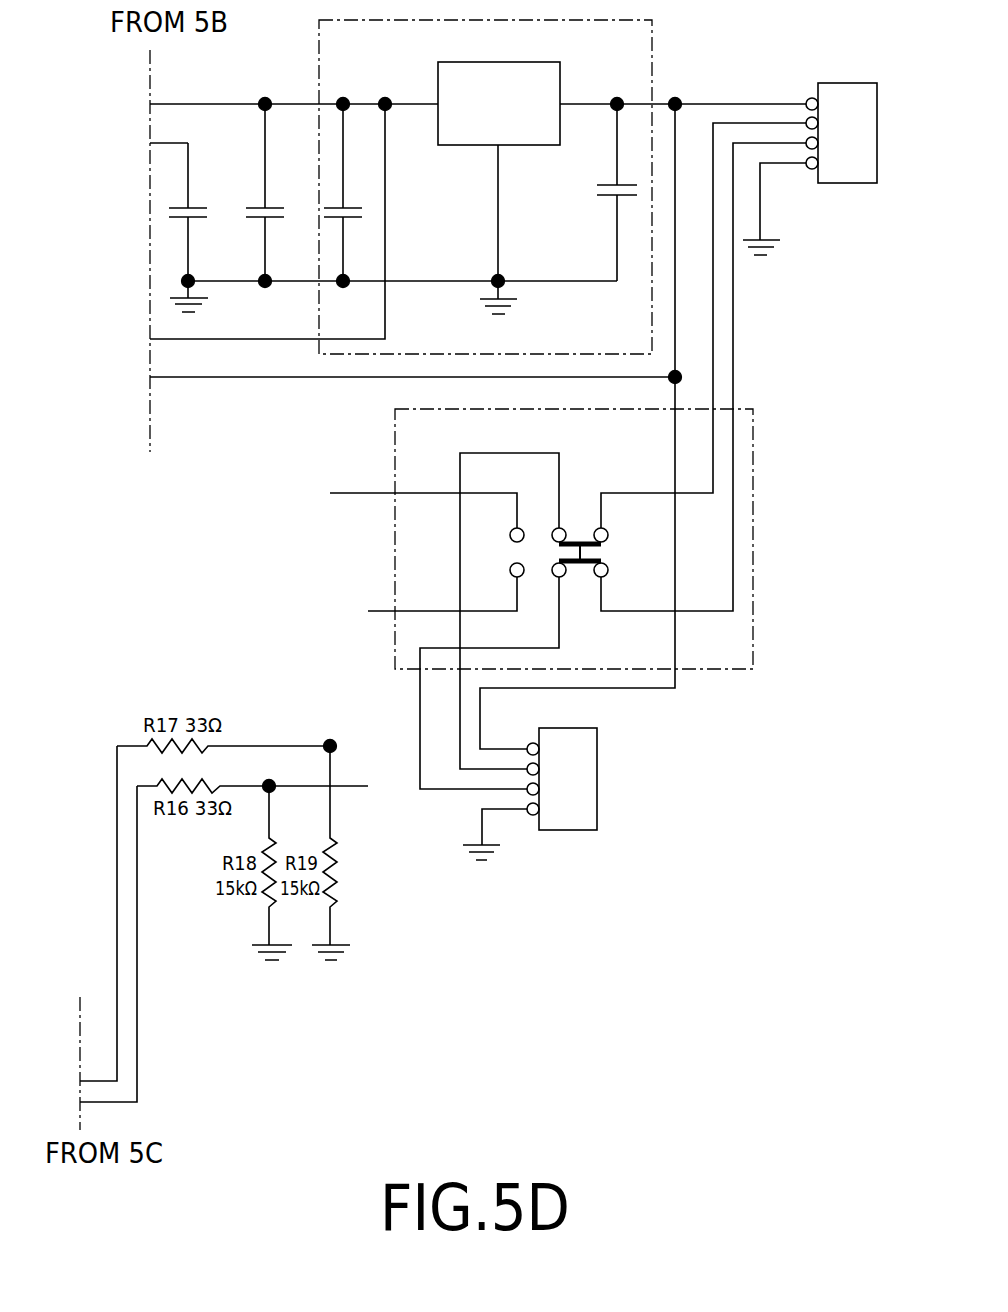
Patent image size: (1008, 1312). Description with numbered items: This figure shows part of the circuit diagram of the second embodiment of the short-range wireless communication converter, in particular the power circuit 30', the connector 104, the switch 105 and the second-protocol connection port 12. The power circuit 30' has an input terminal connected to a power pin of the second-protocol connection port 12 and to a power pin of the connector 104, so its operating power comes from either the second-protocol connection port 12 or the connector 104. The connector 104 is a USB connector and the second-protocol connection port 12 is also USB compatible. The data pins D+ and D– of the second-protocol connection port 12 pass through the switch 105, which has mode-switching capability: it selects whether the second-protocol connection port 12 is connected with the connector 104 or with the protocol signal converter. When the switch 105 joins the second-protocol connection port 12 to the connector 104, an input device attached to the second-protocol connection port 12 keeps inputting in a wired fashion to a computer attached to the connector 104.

The power circuit 30' is at (458, 183).
The connector 104 is at (818, 83).
The switch 105 is at (710, 670).
The second-protocol connection port 12 is at (597, 777).